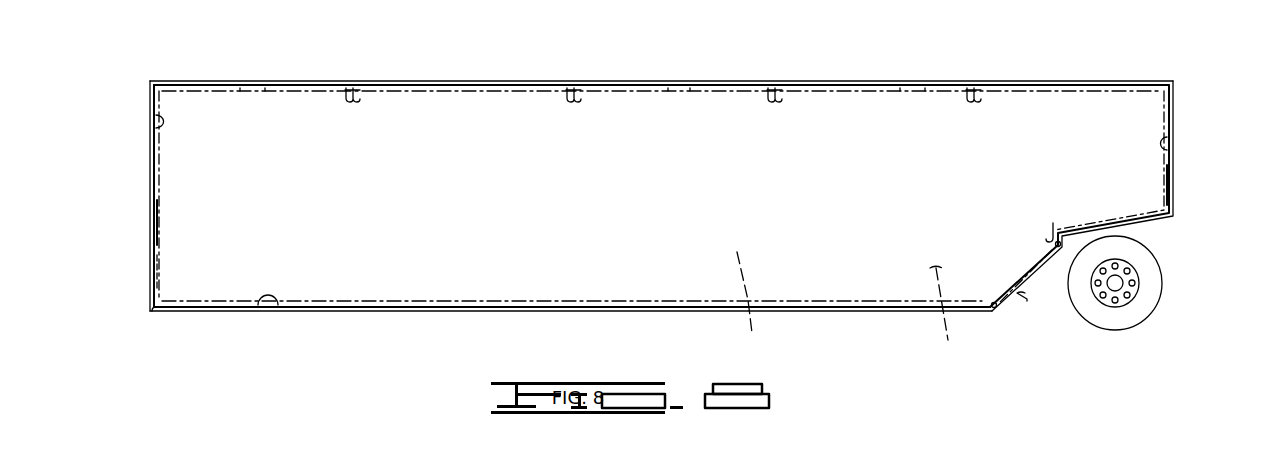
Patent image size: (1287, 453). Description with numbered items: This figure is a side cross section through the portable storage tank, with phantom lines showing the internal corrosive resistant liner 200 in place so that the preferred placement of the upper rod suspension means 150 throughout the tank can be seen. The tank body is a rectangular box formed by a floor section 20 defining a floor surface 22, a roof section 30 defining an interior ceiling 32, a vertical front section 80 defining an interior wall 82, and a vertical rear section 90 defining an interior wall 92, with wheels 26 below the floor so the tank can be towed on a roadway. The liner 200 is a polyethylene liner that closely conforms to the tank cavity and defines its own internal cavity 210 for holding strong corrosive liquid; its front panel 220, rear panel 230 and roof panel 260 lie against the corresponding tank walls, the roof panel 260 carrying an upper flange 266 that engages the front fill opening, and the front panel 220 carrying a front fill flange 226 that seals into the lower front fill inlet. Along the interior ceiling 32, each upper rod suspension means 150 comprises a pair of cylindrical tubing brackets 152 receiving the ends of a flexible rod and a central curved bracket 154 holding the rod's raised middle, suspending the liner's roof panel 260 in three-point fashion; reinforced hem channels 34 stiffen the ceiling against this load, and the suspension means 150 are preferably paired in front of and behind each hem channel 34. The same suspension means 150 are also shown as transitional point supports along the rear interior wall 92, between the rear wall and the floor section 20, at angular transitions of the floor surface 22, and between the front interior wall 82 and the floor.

The floor section 20 is at (360, 311).
The floor surface 22 is at (257, 305).
The wheels 26 is at (1140, 290).
The roof section 30 is at (462, 84).
The interior ceiling 32 is at (685, 91).
The reinforced hem channel 34 is at (574, 88).
The vertical front section 80 is at (152, 165).
The interior wall 82 is at (160, 128).
The vertical rear section 90 is at (1175, 125).
The interior wall 92 is at (1175, 143).
The upper rod suspension means 150 is at (977, 92).
The cylindrical tubing brackets 152 is at (352, 88).
The central curved bracket 154 is at (787, 97).
The internal corrosive resistant liner 200 is at (948, 340).
The internal cavity 210 is at (752, 333).
The front panel 220 is at (152, 270).
The front fill flange 226 is at (153, 240).
The rear panel 230 is at (1170, 192).
The roof panel 260 is at (908, 93).
The upper flange 266 is at (258, 88).